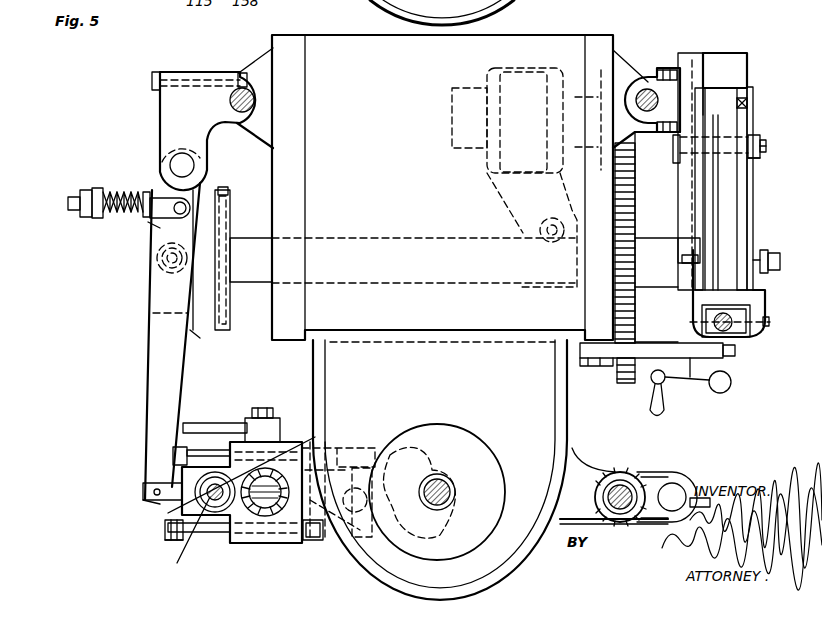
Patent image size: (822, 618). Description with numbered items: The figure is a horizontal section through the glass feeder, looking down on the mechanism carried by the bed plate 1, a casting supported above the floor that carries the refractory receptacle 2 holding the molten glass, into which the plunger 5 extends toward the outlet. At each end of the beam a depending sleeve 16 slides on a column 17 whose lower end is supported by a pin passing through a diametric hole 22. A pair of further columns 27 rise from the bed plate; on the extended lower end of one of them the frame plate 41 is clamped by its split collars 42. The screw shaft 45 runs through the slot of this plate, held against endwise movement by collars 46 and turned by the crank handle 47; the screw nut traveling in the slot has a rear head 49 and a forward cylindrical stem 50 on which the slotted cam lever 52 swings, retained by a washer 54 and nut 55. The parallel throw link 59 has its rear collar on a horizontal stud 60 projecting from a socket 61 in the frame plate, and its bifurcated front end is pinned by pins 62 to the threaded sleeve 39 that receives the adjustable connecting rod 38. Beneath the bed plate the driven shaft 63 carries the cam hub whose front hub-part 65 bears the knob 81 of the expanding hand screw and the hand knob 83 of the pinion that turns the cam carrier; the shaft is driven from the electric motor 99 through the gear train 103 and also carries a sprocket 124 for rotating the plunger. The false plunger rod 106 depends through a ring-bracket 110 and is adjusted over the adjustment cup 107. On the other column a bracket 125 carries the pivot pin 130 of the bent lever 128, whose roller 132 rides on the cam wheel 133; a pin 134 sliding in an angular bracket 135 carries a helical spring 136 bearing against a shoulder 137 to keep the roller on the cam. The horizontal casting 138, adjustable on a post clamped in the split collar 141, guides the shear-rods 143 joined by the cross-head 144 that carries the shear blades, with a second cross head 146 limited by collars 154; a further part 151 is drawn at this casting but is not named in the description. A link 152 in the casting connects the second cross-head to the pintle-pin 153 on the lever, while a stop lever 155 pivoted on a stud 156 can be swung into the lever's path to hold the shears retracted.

The bed plate 1 is at (490, 470).
The receptacle 2 is at (442, 211).
The plunger 5 is at (455, 492).
The sleeve 16 is at (268, 530).
The column 17 is at (276, 483).
The diametric hole 22 is at (268, 541).
The column 27 is at (255, 101).
The connecting rod 38 is at (732, 329).
The threaded sleeve 39 is at (735, 330).
The frame plate 41 is at (693, 53).
The split collar 42 is at (652, 84).
The screw shaft 45 is at (692, 292).
The collar 46 is at (678, 248).
The crank handle 47 is at (690, 382).
The head 49 is at (676, 158).
The cylindrical stem 50 is at (768, 149).
The cam lever 52 is at (752, 118).
The washer 54 is at (755, 163).
The nut 55 is at (766, 156).
The parallel throw link 59 is at (750, 204).
The horizontal stud 60 is at (748, 100).
The socket 61 is at (703, 92).
The pin 62 is at (769, 323).
The driven shaft 63 is at (251, 260).
The front hub-part 65 is at (754, 288).
The knob 81 is at (781, 263).
The hand knob 83 is at (768, 251).
The electric motor 99 is at (522, 68).
The gear train 103 is at (635, 329).
The false plunger rod 106 is at (181, 540).
The adjustment cup 107 is at (203, 495).
The ring-bracket 110 is at (685, 476).
The sprocket 124 is at (226, 196).
The bracket 125 is at (212, 119).
The bent lever 128 is at (152, 353).
The pivot pin 130 is at (188, 165).
The roller 132 is at (158, 262).
The cam wheel 133 is at (200, 335).
The pin 134 is at (78, 197).
The angular bracket 135 is at (157, 228).
The helical spring 136 is at (117, 190).
The shoulder 137 is at (147, 182).
The plate or casting 138 is at (257, 545).
The split collar 141 is at (683, 473).
The shear-rod 143 is at (202, 453).
The cross-head 144 is at (366, 441).
The second cross head 146 is at (425, 456).
The plate 151 is at (169, 541).
The link 152 is at (156, 483).
The pintle-pin 153 is at (153, 491).
The collar 154 is at (310, 541).
The stop lever 155 is at (216, 416).
The stud 156 is at (263, 408).